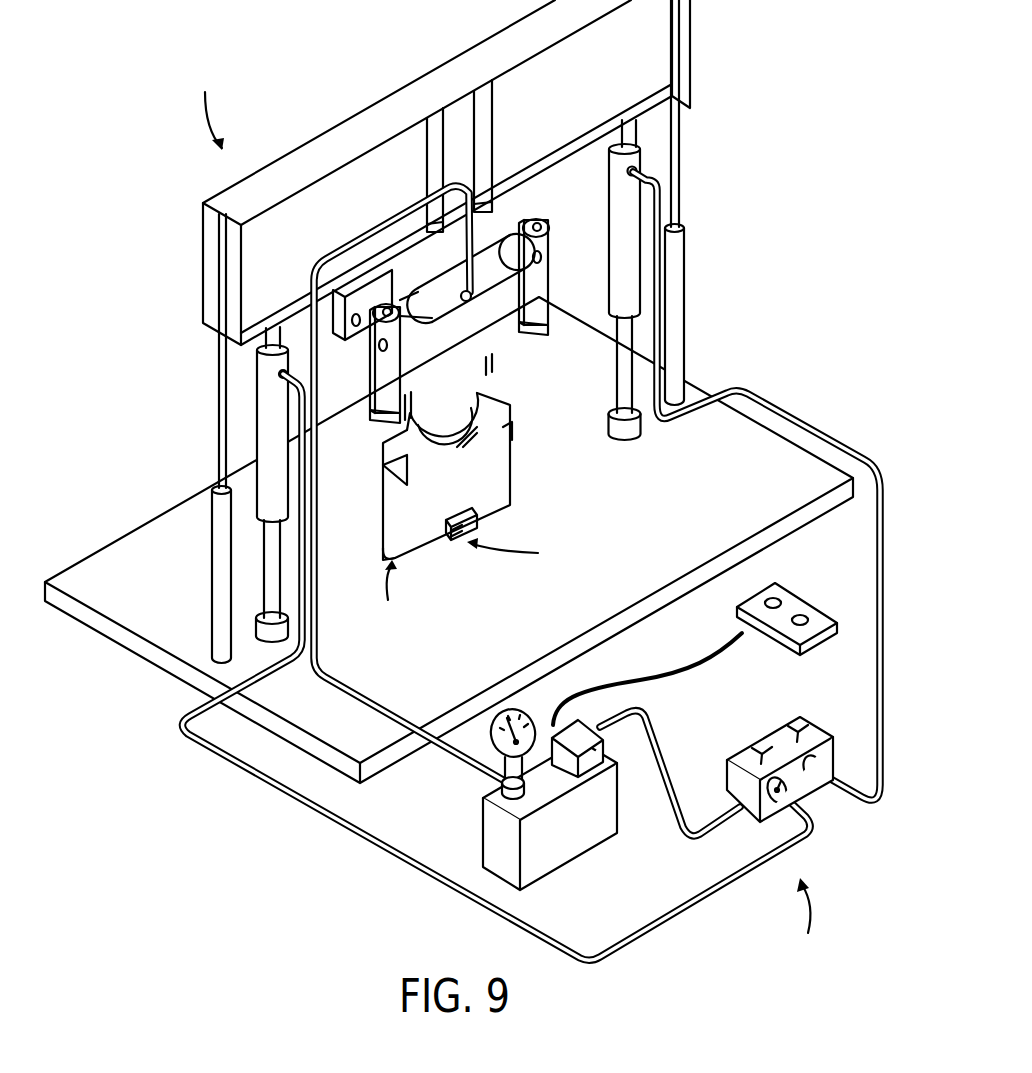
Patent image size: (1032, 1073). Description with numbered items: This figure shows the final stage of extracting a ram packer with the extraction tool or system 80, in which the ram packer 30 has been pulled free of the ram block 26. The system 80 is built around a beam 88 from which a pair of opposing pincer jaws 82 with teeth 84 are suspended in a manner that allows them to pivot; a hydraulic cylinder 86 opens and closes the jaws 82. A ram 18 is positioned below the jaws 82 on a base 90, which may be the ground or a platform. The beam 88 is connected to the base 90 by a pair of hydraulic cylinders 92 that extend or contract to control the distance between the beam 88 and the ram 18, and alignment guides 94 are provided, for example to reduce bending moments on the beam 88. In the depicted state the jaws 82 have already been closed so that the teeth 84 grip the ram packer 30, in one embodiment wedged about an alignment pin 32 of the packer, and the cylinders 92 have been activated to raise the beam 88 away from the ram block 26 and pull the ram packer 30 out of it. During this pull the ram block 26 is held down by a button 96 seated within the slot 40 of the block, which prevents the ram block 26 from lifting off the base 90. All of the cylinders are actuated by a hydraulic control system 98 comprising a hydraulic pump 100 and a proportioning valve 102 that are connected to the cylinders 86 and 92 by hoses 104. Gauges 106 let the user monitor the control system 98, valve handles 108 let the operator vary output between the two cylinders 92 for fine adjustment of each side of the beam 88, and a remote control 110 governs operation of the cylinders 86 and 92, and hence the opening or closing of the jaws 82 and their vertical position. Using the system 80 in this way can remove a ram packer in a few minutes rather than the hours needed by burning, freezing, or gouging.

The ram 18 is at (388, 589).
The ram block 26 is at (500, 507).
The ram packer 30 is at (517, 332).
The alignment pin 32 is at (510, 375).
The slot 40 is at (507, 537).
The extraction tool or system 80 is at (199, 103).
The jaws 82 is at (543, 290).
The teeth 84 is at (380, 410).
The hydraulic cylinder 86 is at (480, 213).
The beam 88 is at (347, 133).
The base 90 is at (108, 556).
The hydraulic cylinders 92 is at (260, 378).
The alignment guides 94 is at (210, 513).
The button 96 is at (458, 538).
The hydraulic control system 98 is at (796, 920).
The hydraulic pump 100 is at (588, 838).
The proportioning valve 102 is at (807, 720).
The hoses 104 is at (875, 597).
The gauges 106 is at (512, 712).
The valve handles 108 is at (762, 748).
The remote control 110 is at (740, 620).